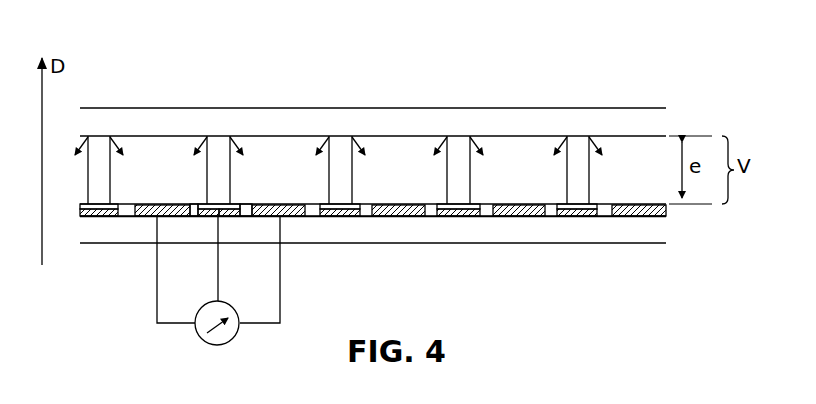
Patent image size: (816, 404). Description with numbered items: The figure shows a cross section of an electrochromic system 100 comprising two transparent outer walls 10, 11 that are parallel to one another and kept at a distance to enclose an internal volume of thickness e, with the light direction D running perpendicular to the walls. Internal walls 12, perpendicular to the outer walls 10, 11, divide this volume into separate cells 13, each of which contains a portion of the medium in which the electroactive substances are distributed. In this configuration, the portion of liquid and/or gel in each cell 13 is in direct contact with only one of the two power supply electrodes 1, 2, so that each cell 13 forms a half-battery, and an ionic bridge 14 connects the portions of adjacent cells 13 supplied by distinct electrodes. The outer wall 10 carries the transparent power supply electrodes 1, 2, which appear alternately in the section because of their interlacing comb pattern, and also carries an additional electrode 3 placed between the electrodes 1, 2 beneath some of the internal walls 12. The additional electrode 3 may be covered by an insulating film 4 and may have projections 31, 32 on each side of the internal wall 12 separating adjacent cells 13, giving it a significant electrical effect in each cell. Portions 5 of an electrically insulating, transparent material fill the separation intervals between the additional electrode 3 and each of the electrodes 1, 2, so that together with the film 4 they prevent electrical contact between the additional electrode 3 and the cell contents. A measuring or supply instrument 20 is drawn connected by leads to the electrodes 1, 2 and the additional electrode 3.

The electrochromic system 100 is at (661, 78).
The outer wall 11 is at (659, 123).
The outer wall 10 is at (656, 228).
The internal wall 12 is at (460, 142).
The ionic bridge 14 is at (204, 140).
The cell 13 is at (137, 181).
The power supply electrode 1 is at (153, 217).
The power supply electrode 2 is at (292, 217).
The additional electrode 3 is at (110, 217).
The insulating film 4 is at (85, 210).
The portion of electrically insulating material 5 is at (190, 217).
The projection 31 is at (200, 206).
The projection 32 is at (236, 206).
The measuring instrument 20 is at (235, 338).